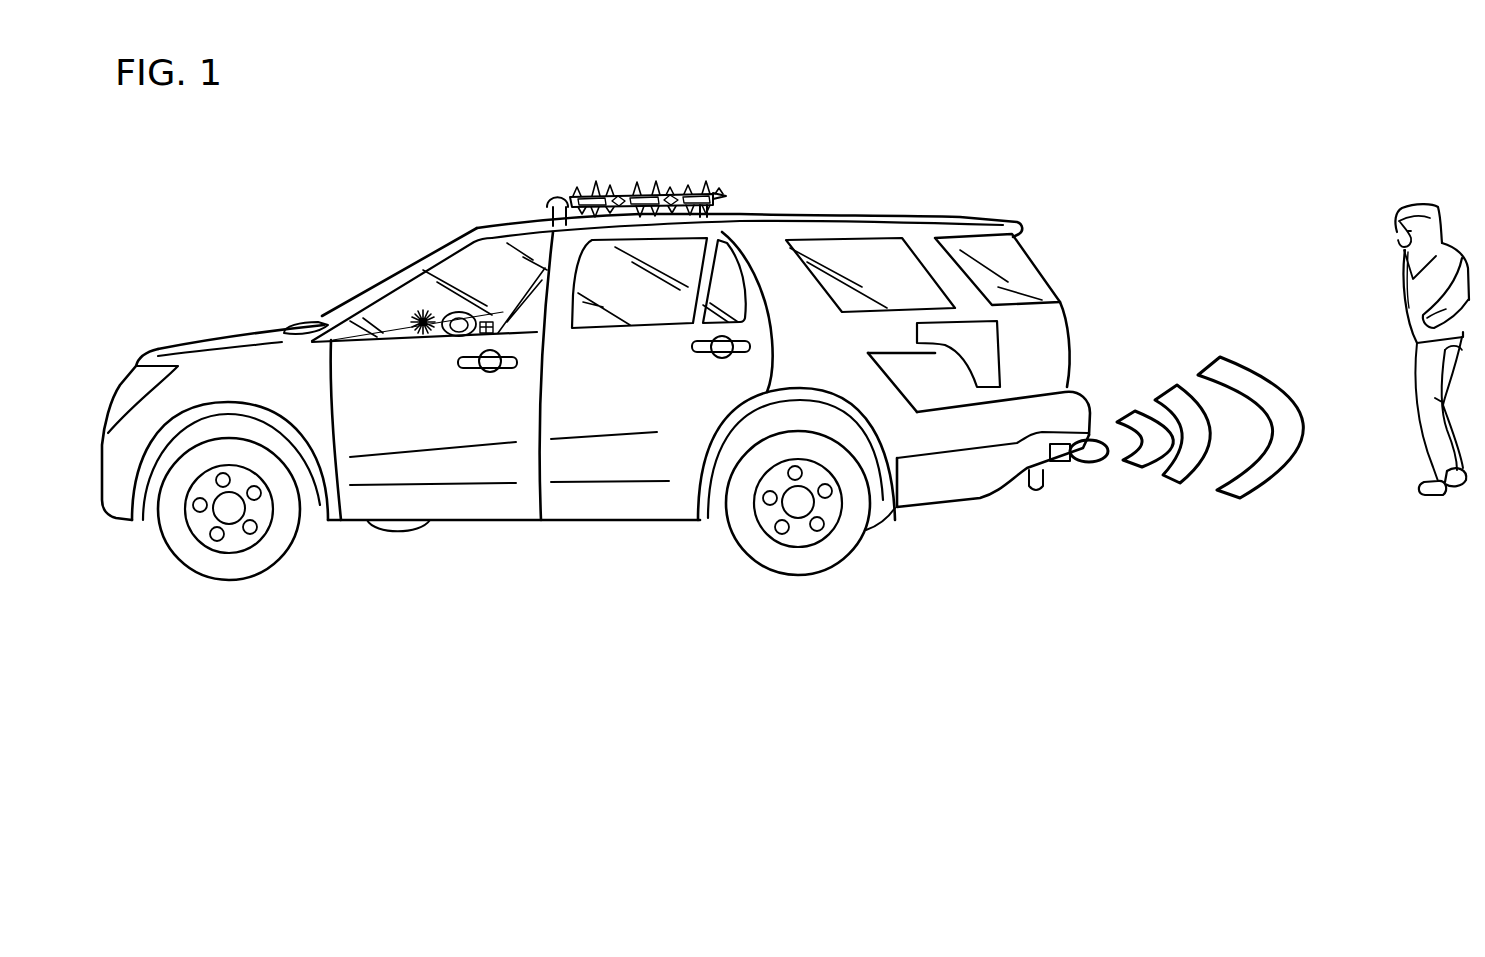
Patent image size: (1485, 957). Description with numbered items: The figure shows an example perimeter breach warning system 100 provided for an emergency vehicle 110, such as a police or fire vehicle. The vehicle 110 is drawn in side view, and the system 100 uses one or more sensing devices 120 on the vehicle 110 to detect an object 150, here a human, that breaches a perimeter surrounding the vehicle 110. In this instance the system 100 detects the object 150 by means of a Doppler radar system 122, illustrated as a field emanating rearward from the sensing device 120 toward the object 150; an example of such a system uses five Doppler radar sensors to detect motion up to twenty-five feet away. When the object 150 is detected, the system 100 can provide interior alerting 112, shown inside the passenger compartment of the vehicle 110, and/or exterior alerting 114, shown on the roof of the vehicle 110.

The perimeter breach warning system 100 is at (1196, 65).
The emergency vehicle 110 is at (487, 503).
The interior alerting 112 is at (418, 320).
The exterior alerting 114 is at (650, 197).
The sensing device 120 is at (1060, 455).
The Doppler radar system 122 is at (1178, 384).
The object 150 is at (1405, 206).